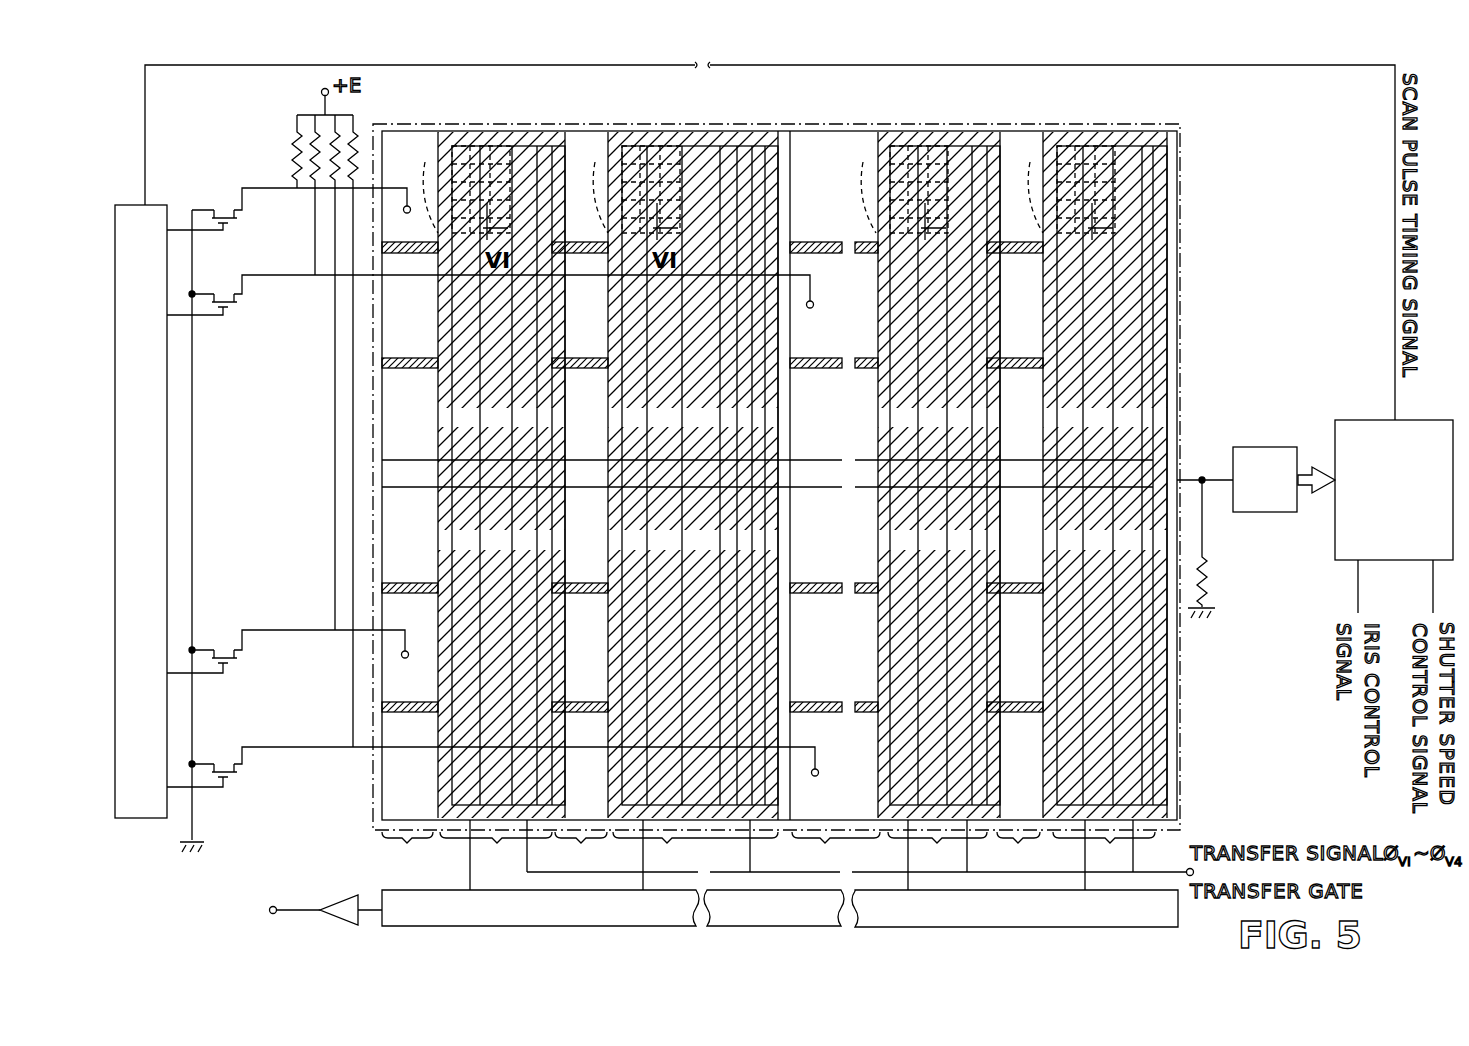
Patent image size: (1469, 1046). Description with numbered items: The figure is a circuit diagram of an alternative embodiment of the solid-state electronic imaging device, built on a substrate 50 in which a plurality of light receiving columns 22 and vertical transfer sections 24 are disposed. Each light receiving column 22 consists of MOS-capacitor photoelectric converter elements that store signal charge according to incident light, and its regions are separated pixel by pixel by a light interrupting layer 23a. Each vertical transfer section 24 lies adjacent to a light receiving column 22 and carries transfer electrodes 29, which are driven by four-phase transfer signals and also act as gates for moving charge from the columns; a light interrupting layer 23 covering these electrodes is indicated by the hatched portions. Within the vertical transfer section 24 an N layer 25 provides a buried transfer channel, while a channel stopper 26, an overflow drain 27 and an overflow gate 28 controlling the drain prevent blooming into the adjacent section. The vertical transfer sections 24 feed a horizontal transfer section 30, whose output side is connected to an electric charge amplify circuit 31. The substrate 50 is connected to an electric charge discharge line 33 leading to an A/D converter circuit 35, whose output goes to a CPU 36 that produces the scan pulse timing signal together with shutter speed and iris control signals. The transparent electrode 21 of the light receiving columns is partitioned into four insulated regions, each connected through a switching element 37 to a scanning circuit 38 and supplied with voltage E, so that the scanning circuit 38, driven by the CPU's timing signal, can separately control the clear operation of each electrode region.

The transparent electrode 21 is at (404, 128).
The light receiving column 22 is at (711, 850).
The light interrupting layer 23 is at (445, 137).
The light interrupting layer 23a is at (407, 254).
The vertical transfer section 24 is at (797, 850).
The N layer 25 is at (467, 143).
The channel stopper 26 is at (503, 143).
The overflow drain 27 is at (522, 143).
The overflow gate 28 is at (543, 143).
The transfer electrode 29 is at (426, 163).
The horizontal transfer section 30 is at (788, 889).
The electric charge amplify circuit 31 is at (337, 907).
The electric charge discharge line 33 is at (1188, 478).
The A/D converter circuit 35 is at (1263, 500).
The CPU 36 is at (1360, 424).
The switching element 37 is at (237, 222).
The scanning circuit 38 is at (140, 807).
The substrate 50 is at (1177, 237).